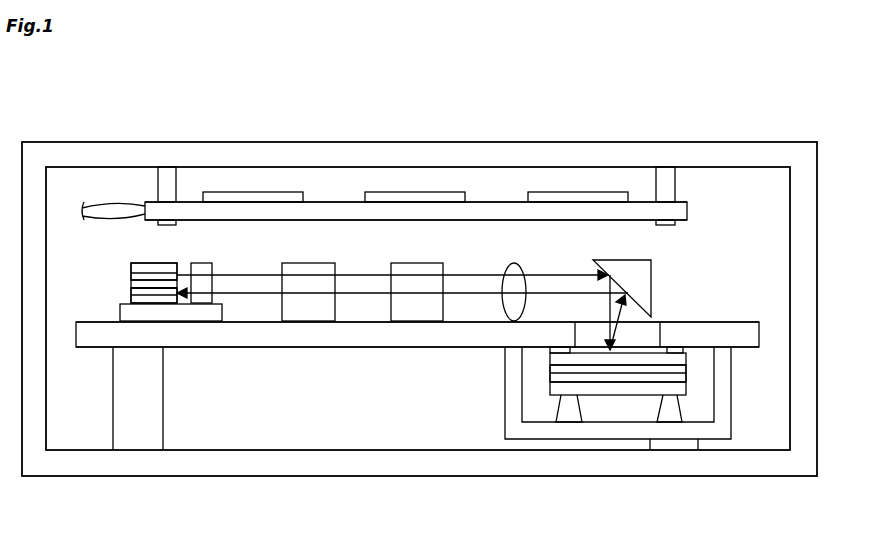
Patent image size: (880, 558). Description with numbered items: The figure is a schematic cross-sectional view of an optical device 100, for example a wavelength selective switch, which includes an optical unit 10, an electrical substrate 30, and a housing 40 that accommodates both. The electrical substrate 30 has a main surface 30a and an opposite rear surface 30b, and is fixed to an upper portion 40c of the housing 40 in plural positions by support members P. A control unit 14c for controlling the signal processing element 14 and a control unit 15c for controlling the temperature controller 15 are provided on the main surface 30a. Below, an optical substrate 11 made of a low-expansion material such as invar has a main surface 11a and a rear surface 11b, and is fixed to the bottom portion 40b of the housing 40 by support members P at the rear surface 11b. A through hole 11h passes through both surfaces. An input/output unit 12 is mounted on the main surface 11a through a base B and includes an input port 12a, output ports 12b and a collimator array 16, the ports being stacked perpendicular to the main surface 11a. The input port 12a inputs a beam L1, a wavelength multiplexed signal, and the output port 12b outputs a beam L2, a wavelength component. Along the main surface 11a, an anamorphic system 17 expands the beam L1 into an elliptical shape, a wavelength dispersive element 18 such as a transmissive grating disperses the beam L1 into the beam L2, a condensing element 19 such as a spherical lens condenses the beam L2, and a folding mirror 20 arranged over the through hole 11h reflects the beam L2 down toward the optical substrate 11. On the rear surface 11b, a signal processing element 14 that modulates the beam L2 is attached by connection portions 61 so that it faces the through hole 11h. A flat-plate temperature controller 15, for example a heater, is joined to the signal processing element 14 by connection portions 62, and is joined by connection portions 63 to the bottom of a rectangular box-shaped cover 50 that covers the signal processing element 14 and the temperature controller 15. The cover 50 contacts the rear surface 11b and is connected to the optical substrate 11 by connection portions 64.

The optical device 100 is at (781, 78).
The optical unit 10 is at (732, 269).
The housing 40 is at (808, 186).
The upper portion 40c is at (325, 150).
The bottom portion 40b is at (375, 476).
The support member P is at (167, 180).
The electrical substrate 30 is at (688, 210).
The main surface 30a is at (685, 200).
The rear surface 30b is at (685, 222).
The control unit 14c is at (448, 196).
The control unit 15c is at (583, 196).
The input/output unit 12 is at (154, 283).
The input port 12a is at (131, 275).
The output port 12b is at (131, 293).
The collimator array 16 is at (217, 247).
The base B is at (201, 312).
The beam L1 is at (268, 272).
The beam L2 is at (482, 272).
The anamorphic system 17 is at (300, 262).
The wavelength dispersive element 18 is at (405, 262).
The condensing element 19 is at (516, 262).
The folding mirror 20 is at (621, 262).
The optical substrate 11 is at (760, 328).
The main surface 11a is at (737, 322).
The rear surface 11b is at (758, 349).
The through hole 11h is at (657, 330).
The connection portion 64 is at (510, 337).
The connection portion 61 is at (560, 347).
The signal processing element 14 is at (687, 362).
The connection portion 62 is at (560, 375).
The temperature controller 15 is at (687, 390).
The connection portion 63 is at (564, 414).
The cover 50 is at (731, 426).